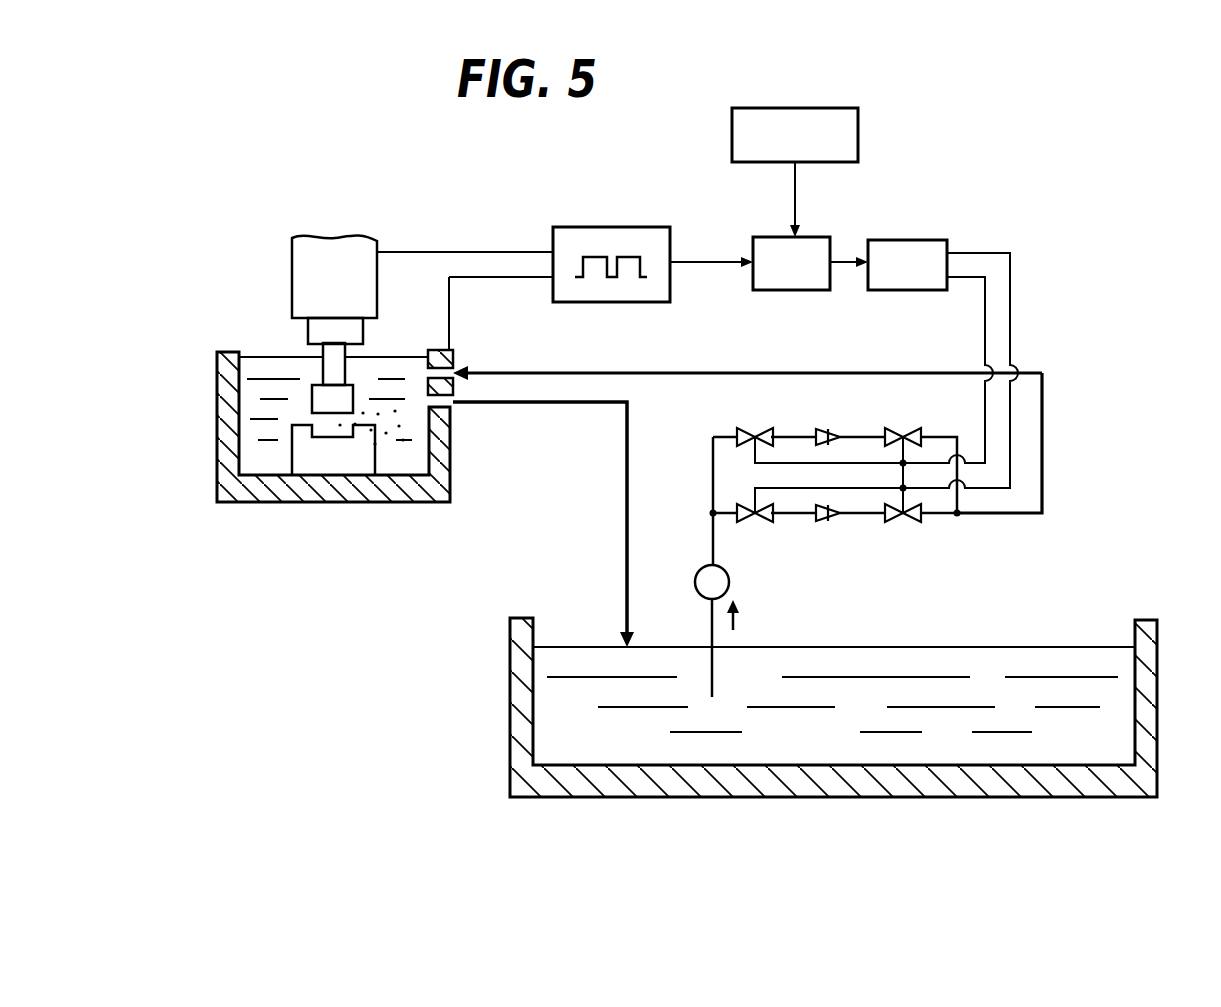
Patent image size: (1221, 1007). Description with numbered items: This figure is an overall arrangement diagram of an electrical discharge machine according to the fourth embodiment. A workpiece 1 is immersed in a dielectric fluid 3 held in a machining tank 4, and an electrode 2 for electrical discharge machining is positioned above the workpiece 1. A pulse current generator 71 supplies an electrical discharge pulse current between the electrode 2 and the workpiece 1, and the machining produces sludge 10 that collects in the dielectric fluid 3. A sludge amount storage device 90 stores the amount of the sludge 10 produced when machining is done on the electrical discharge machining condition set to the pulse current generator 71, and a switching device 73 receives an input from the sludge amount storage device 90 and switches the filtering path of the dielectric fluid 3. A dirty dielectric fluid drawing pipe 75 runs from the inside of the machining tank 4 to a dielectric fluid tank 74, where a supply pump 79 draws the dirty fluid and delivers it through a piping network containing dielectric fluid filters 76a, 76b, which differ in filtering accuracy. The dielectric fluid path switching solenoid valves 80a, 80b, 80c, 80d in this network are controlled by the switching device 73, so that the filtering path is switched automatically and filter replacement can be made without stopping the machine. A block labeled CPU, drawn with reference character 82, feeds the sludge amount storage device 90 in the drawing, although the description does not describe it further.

The workpiece 1 is at (312, 462).
The electrode 2 is at (342, 397).
The dielectric fluid 3 is at (262, 368).
The machining tank 4 is at (218, 388).
The sludge 10 is at (390, 445).
The pulse current generator 71 is at (612, 228).
The switching device 73 is at (907, 265).
The dielectric fluid tank 74 is at (1160, 650).
The dirty dielectric fluid drawing pipe 75 is at (553, 406).
The dielectric fluid filter 76a is at (833, 430).
The dielectric fluid filter 76b is at (832, 522).
The supply pump 79 is at (696, 573).
The dielectric fluid path switching solenoid valve 80a is at (753, 432).
The dielectric fluid path switching solenoid valve 80b is at (906, 432).
The dielectric fluid path switching solenoid valve 80c is at (760, 522).
The dielectric fluid path switching solenoid valve 80d is at (910, 522).
The CPU 82 is at (860, 122).
The sludge amount storage device 90 is at (791, 263).